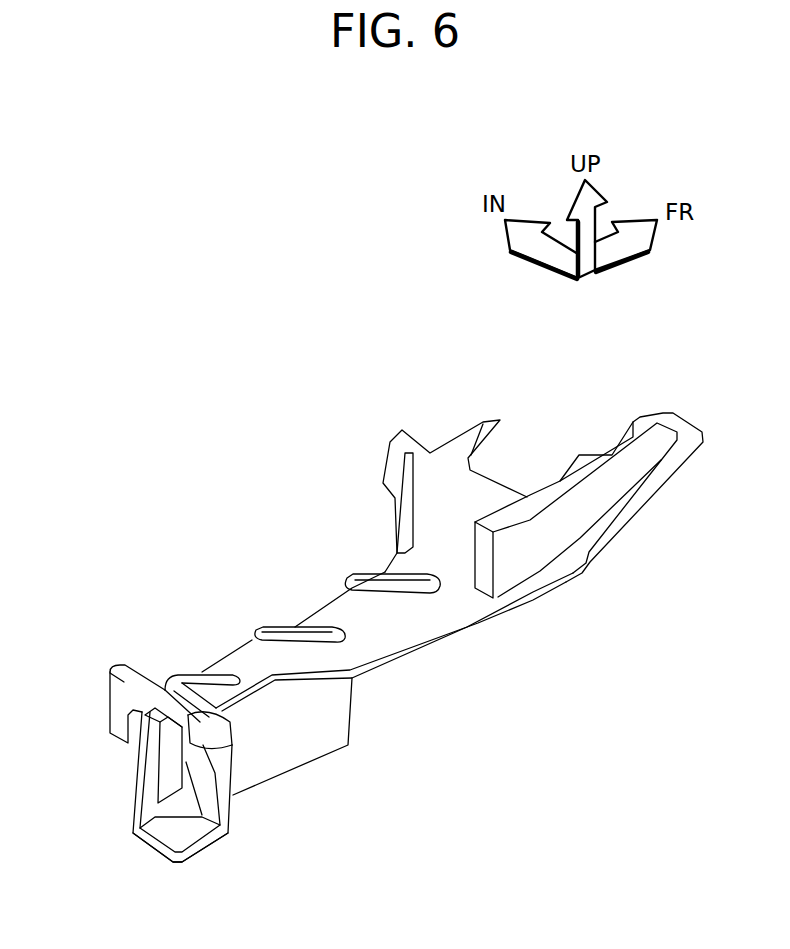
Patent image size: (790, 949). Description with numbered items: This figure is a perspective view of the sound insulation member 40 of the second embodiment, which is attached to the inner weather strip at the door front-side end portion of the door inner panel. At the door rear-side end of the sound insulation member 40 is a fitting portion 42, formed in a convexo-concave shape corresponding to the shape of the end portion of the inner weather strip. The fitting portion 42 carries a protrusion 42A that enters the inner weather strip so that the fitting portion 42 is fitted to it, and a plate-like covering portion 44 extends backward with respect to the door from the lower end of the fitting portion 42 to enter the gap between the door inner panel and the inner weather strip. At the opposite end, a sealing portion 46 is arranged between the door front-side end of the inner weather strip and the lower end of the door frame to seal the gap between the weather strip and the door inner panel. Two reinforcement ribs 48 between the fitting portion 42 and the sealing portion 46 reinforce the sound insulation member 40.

The sound insulation member 40 is at (305, 473).
The fitting portion 42 is at (125, 800).
The protrusion 42A is at (125, 767).
The covering portion 44 is at (208, 858).
The sealing portion 46 is at (493, 473).
The reinforcement ribs 48 is at (348, 573).